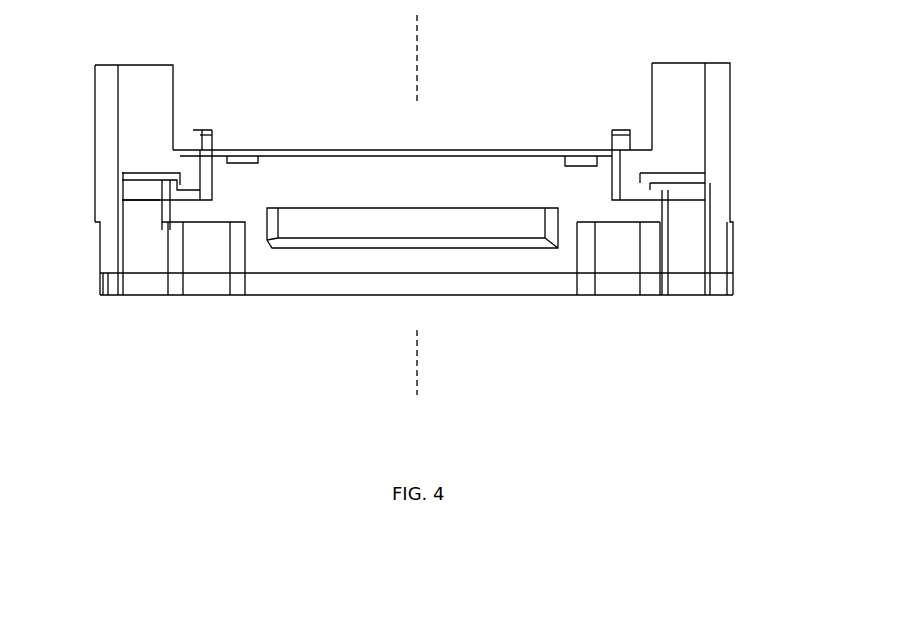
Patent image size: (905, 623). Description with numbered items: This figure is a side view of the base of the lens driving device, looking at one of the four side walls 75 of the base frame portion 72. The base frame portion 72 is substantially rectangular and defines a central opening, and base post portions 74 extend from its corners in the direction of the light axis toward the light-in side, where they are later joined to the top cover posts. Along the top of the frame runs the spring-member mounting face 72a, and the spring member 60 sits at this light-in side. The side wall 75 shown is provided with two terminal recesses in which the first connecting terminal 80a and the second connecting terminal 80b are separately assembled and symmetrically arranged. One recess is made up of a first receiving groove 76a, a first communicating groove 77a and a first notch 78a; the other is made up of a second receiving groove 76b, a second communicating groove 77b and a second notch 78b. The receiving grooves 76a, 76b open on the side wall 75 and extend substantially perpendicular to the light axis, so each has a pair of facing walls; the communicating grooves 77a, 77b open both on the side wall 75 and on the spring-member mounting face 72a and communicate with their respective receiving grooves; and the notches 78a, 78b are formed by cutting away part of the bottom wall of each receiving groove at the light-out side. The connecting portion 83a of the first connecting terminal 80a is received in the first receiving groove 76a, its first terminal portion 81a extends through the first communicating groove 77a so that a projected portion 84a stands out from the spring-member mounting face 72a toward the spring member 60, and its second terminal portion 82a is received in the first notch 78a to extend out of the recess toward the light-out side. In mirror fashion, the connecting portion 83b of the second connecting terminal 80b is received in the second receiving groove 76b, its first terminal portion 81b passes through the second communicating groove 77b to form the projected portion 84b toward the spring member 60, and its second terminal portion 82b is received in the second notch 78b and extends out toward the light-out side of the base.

The spring member 60 is at (491, 150).
The base frame portion 72 is at (455, 188).
The spring-member mounting face 72a is at (322, 150).
The base post portion 74 is at (137, 82).
The side wall 75 is at (404, 181).
The first receiving groove 76a is at (660, 182).
The second receiving groove 76b is at (160, 190).
The first communicating groove 77a is at (630, 147).
The second communicating groove 77b is at (184, 172).
The first notch 78a is at (668, 212).
The second notch 78b is at (150, 212).
The first connecting terminal 80a is at (683, 290).
The second connecting terminal 80b is at (138, 290).
The first terminal portion 81a is at (612, 155).
The first terminal portion 81b is at (213, 160).
The second terminal portion 82a is at (682, 263).
The second terminal portion 82b is at (150, 258).
The connecting portion 83a is at (655, 192).
The connecting portion 83b is at (173, 210).
The projected portion 84a is at (612, 140).
The projected portion 84b is at (205, 135).